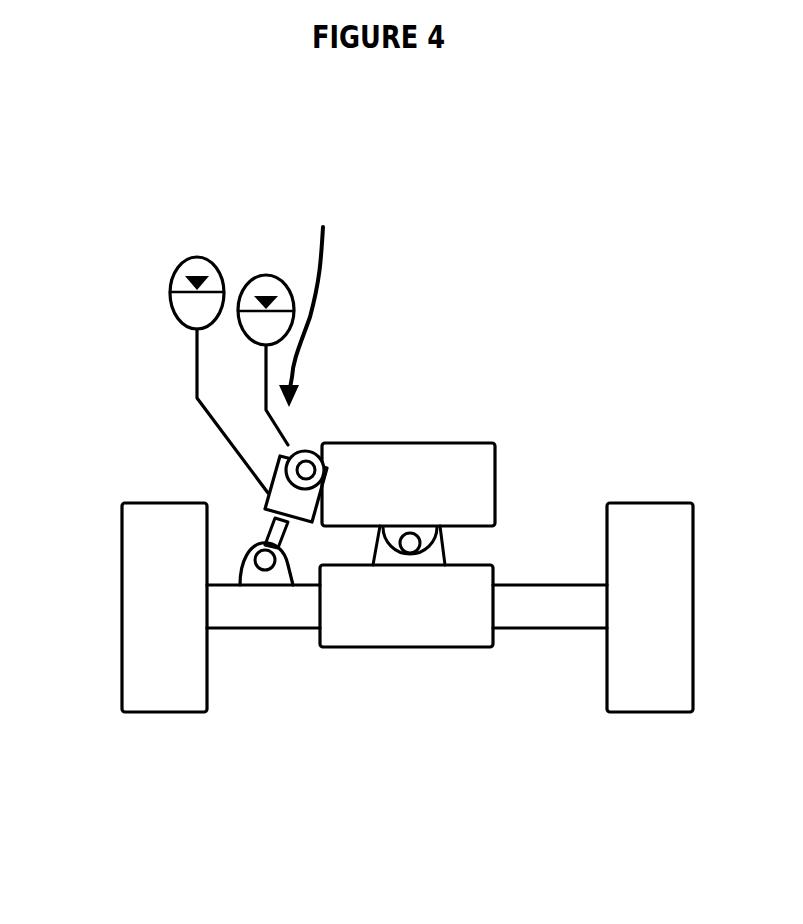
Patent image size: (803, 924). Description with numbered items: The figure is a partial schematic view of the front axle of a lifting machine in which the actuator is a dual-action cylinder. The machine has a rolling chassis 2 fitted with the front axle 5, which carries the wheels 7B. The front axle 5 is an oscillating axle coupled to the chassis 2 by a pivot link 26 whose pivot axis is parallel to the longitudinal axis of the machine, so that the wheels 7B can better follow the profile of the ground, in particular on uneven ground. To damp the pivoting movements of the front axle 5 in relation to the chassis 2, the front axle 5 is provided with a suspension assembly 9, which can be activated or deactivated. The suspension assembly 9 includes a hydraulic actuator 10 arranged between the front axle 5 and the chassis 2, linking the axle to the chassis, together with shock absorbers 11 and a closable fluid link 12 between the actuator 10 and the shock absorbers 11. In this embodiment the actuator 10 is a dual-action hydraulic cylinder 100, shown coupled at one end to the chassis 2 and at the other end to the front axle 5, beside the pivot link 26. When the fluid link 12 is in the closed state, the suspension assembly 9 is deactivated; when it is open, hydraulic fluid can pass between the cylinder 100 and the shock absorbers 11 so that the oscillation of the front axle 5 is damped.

The chassis 2 is at (496, 492).
The front axle 5 is at (440, 647).
The wheels 7B is at (207, 682).
The suspension assembly 9 is at (305, 299).
The hydraulic actuator 10 is at (303, 447).
The dual-action hydraulic cylinder 100 is at (320, 445).
The shock absorbers 11 is at (266, 277).
The closable fluid link 12 is at (196, 362).
The pivot link 26 is at (412, 530).